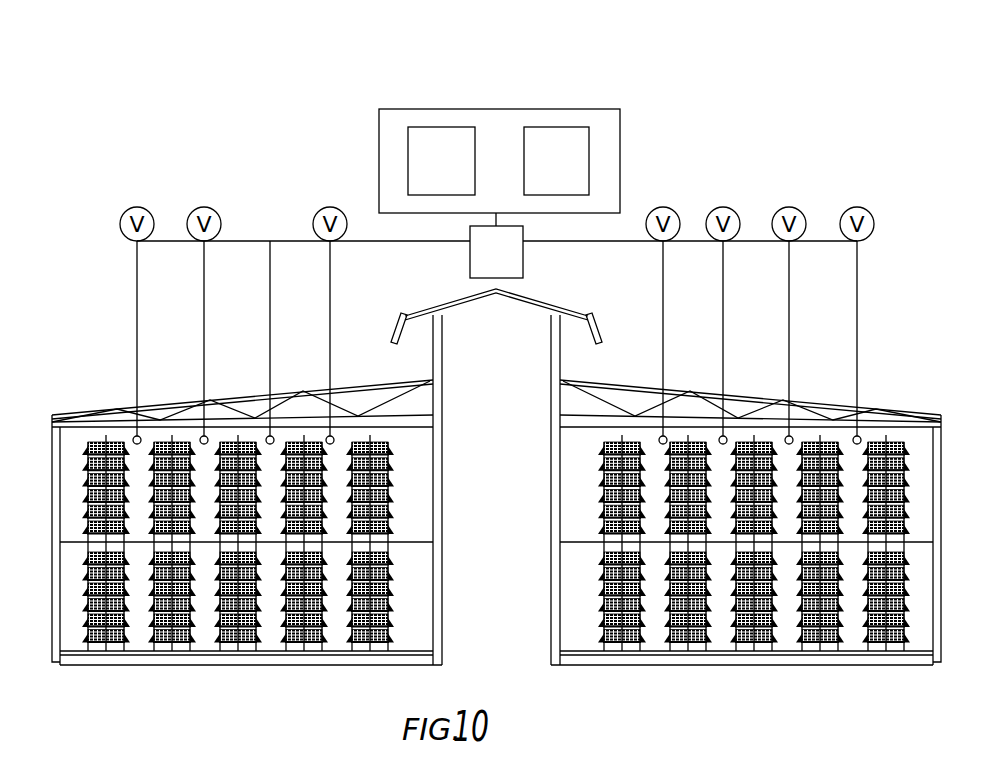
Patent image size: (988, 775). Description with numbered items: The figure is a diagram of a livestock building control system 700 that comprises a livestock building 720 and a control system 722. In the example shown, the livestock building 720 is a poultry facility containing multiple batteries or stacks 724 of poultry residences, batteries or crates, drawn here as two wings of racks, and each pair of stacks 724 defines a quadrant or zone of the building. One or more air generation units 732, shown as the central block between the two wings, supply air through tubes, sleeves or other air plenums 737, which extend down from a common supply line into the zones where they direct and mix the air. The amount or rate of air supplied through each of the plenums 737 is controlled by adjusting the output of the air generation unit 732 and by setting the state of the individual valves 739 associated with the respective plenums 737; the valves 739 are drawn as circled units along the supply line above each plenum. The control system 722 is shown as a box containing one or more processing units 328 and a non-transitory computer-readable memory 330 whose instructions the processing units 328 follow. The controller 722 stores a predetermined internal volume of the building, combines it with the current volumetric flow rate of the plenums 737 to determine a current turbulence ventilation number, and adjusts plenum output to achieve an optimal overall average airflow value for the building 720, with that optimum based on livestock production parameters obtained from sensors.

The plant growing system 700 is at (92, 170).
The controller 722 is at (377, 128).
The processing unit 328 is at (430, 127).
The memory 330 is at (557, 127).
The air generation unit 732 is at (523, 265).
The valve 739 is at (149, 209).
The air plenum 737 is at (139, 436).
The livestock building 720 is at (57, 417).
The stack 724 is at (87, 482).